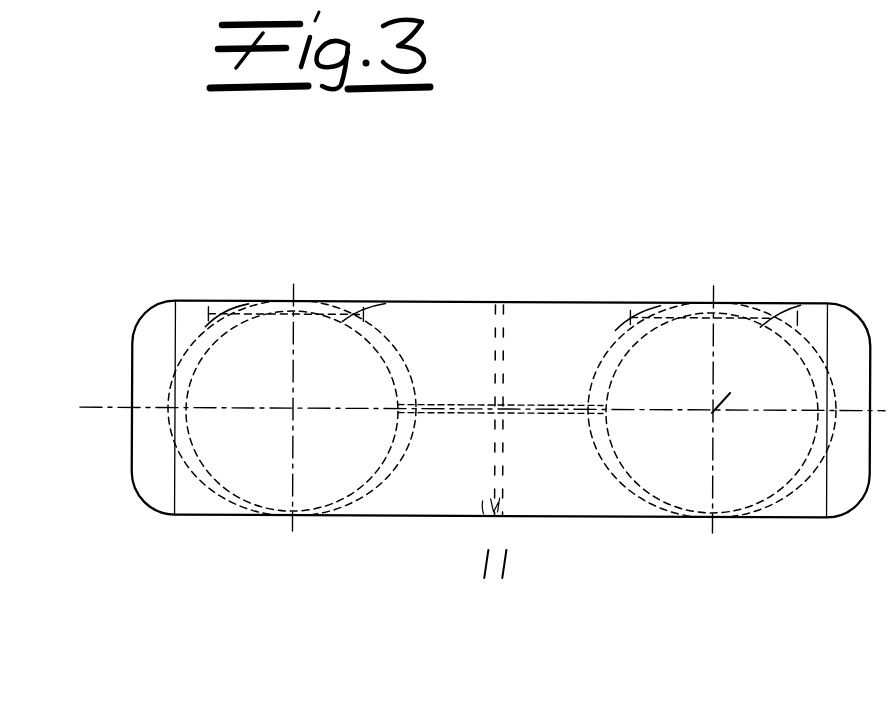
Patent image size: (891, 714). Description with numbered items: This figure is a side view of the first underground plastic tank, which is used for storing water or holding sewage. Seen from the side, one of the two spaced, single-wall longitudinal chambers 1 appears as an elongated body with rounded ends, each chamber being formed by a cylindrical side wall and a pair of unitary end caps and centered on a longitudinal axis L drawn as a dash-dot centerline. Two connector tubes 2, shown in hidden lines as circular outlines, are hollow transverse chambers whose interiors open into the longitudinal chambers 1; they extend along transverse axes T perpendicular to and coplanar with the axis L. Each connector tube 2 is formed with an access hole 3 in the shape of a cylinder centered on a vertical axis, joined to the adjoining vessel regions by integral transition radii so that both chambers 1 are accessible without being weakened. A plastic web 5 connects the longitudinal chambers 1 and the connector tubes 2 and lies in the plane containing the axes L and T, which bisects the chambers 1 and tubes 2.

The longitudinal chamber 1 is at (474, 502).
The connector tube 2 is at (412, 333).
The access hole 3 is at (207, 312).
The plastic web 5 is at (537, 414).
The longitudinal axis L is at (97, 409).
The transverse axis T is at (755, 387).